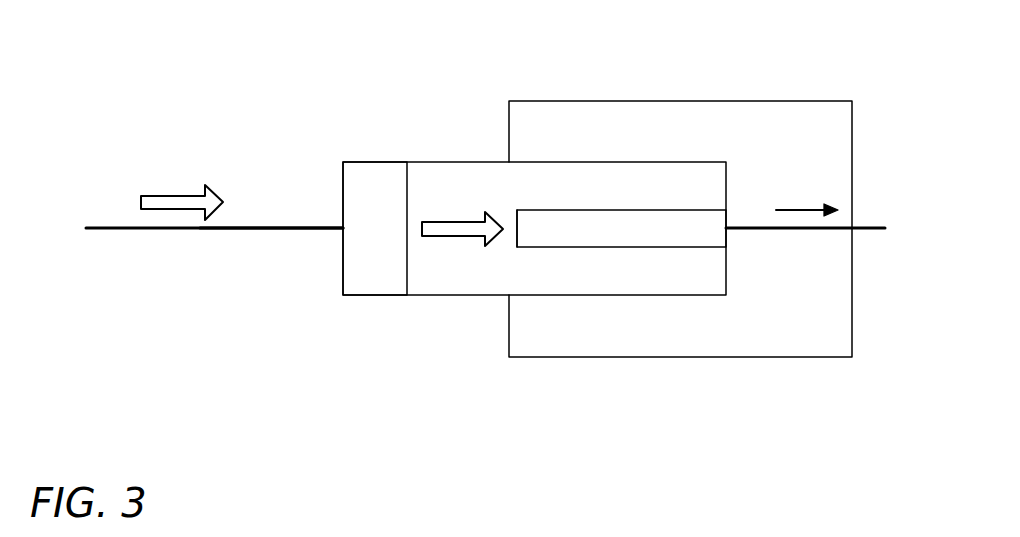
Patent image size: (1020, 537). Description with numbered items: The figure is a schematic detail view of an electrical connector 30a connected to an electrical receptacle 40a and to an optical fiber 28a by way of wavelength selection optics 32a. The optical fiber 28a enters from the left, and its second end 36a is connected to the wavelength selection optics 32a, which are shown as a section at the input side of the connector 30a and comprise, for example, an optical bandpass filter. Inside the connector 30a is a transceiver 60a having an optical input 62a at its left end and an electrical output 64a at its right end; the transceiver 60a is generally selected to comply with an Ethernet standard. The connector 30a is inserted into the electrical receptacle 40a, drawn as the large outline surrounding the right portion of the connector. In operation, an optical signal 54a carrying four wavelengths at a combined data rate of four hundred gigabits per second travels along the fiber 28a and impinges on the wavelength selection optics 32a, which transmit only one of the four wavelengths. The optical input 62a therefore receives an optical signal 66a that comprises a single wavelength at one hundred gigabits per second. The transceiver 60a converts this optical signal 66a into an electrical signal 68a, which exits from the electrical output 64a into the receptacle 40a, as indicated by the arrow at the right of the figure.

The optical fiber 28a is at (84, 229).
The second end of optical fiber 36a is at (250, 229).
The optical signal 54a is at (177, 195).
The electrical connector 30a is at (455, 295).
The wavelength selection optics 32a is at (380, 162).
The optical signal 66a is at (455, 221).
The electrical receptacle 40a is at (700, 101).
The transceiver 60a is at (620, 226).
The optical input 62a is at (517, 228).
The electrical output 64a is at (726, 228).
The electrical signal 68a is at (808, 208).